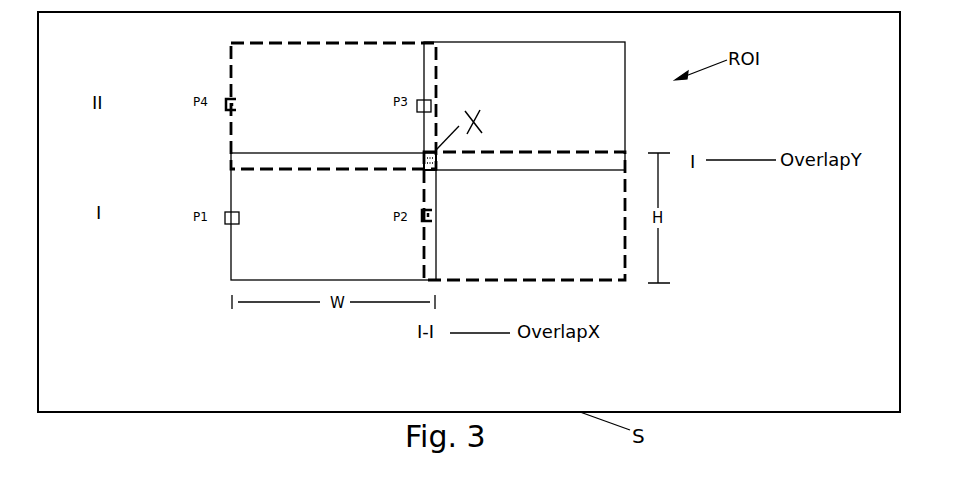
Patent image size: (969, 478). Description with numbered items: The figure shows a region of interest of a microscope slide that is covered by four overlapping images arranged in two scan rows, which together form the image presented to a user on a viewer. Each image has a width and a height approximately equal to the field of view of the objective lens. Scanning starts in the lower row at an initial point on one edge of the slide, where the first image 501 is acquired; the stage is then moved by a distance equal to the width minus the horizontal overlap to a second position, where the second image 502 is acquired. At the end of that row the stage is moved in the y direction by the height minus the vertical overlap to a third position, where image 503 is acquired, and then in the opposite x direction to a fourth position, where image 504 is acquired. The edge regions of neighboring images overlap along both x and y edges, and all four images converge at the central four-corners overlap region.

The first image region 501 is at (333, 216).
The second image region 502 is at (524, 216).
The third image region 503 is at (524, 106).
The fourth image region 504 is at (333, 106).